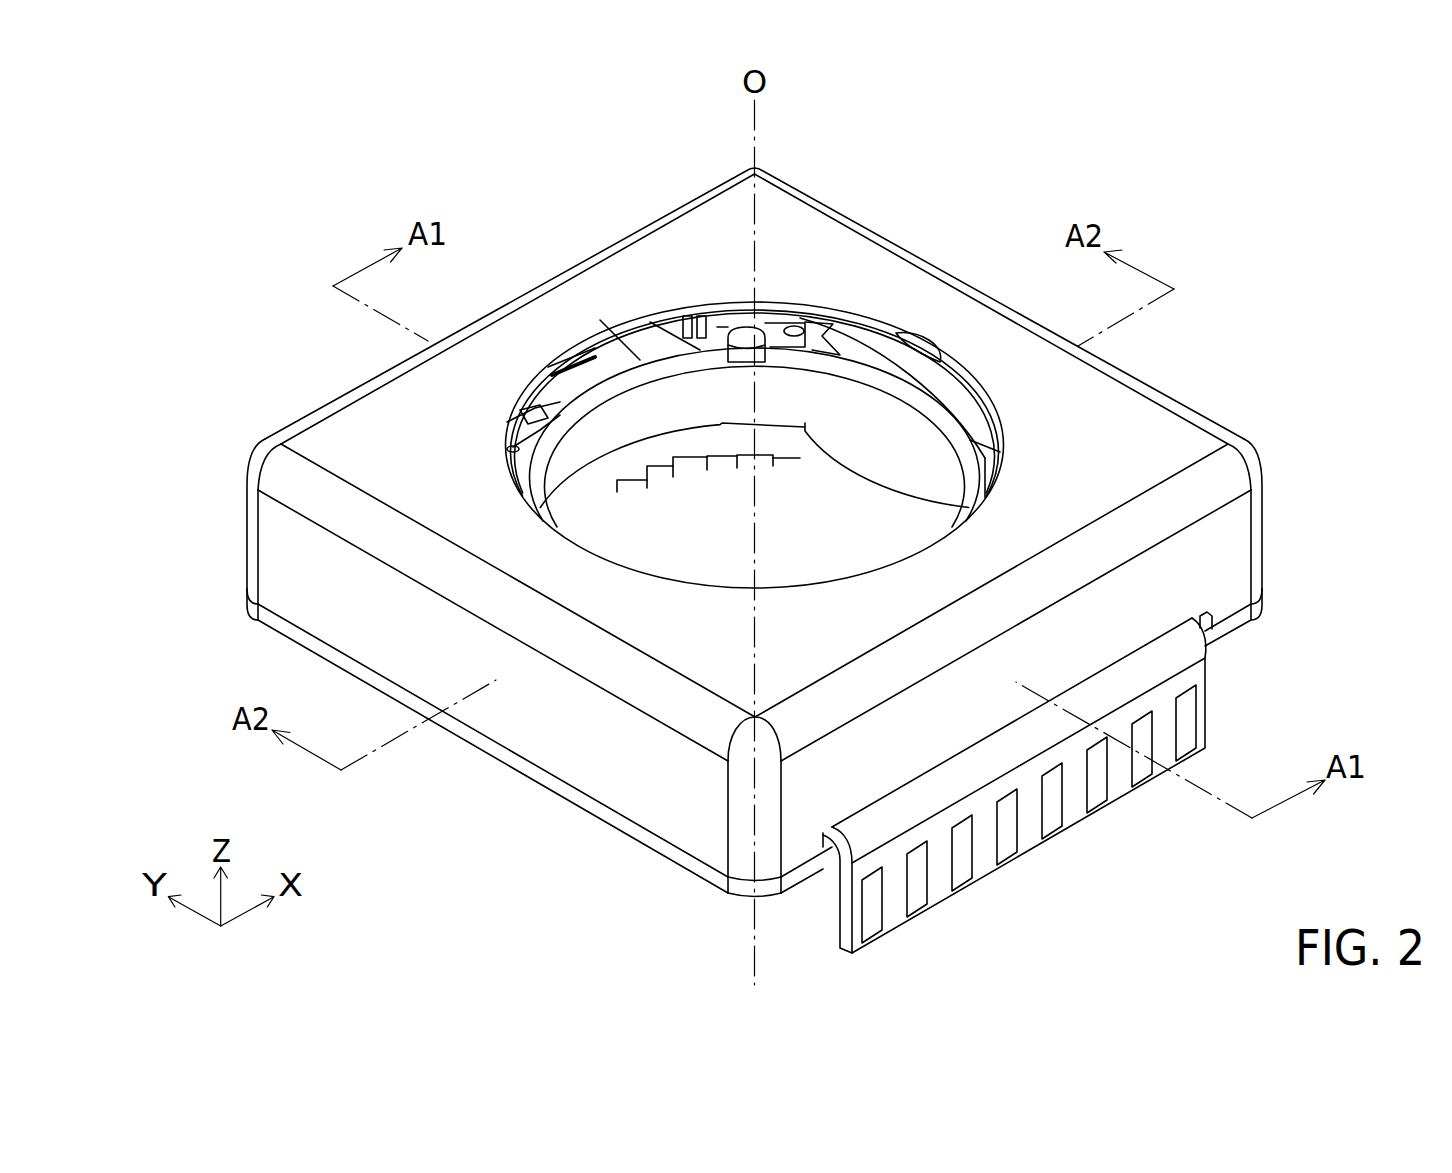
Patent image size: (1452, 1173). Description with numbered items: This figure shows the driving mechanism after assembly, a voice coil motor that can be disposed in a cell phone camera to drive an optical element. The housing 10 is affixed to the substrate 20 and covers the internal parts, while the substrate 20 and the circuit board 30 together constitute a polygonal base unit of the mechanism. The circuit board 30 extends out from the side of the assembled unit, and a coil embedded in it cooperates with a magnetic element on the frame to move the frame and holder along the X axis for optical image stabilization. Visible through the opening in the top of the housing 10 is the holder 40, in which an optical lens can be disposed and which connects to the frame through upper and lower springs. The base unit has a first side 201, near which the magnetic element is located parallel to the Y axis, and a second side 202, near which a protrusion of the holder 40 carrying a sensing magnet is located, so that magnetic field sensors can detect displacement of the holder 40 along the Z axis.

The housing 10 is at (388, 431).
The substrate 20 is at (809, 772).
The first side 201 is at (543, 779).
The second side 202 is at (1262, 598).
The circuit board 30 is at (1162, 737).
The holder 40 is at (800, 390).